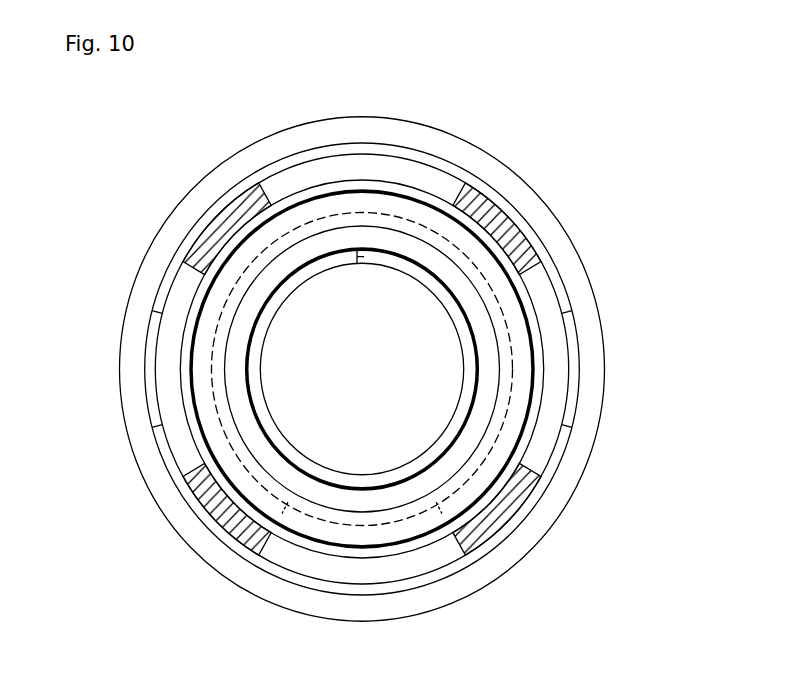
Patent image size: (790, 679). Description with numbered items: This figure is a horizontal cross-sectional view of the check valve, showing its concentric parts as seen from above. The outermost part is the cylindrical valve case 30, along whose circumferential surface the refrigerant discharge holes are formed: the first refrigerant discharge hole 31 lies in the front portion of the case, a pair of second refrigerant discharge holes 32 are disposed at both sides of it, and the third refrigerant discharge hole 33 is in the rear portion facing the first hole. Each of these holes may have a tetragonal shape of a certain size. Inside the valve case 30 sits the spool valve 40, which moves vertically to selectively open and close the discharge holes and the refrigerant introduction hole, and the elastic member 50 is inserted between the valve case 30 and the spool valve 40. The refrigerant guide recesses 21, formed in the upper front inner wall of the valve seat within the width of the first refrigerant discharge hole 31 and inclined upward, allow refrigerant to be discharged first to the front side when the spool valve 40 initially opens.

The valve case 30 is at (517, 207).
The third refrigerant discharge hole 33 is at (348, 164).
The first refrigerant discharge hole 31 is at (425, 560).
The second refrigerant discharge holes 32 is at (168, 362).
The refrigerant guide recesses 21 is at (480, 485).
The spool valve 40 is at (518, 400).
The elastic member 50 is at (470, 412).